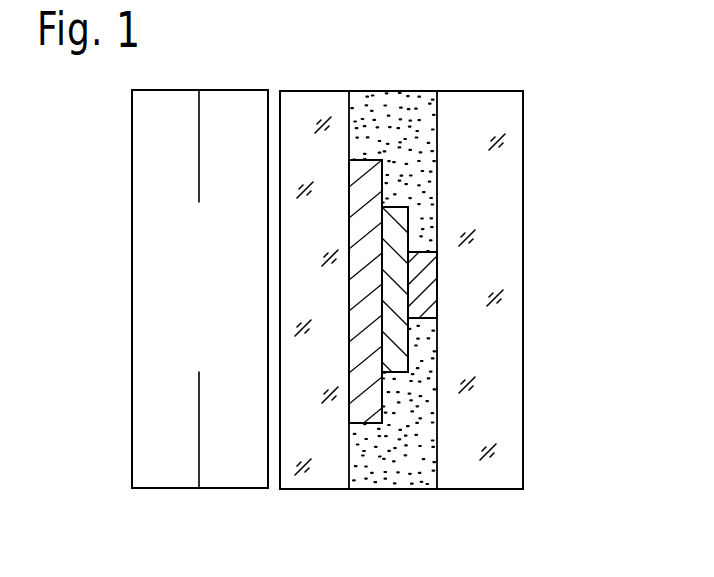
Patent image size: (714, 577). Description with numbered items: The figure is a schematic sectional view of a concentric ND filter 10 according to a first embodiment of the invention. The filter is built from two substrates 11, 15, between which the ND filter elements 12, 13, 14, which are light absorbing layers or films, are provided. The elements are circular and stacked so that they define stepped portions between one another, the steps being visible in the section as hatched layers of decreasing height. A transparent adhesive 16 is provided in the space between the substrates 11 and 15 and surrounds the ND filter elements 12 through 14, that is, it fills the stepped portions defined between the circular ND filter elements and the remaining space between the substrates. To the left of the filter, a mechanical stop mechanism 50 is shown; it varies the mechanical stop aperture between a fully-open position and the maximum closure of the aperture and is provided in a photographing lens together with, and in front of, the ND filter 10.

The mechanical stop mechanism 50 is at (235, 108).
The concentric ND filter 10 is at (560, 132).
The substrate 11 is at (313, 483).
The ND filter element 12 is at (362, 422).
The ND filter element 13 is at (393, 372).
The ND filter element 14 is at (428, 281).
The substrate 15 is at (508, 329).
The transparent adhesive 16 is at (411, 478).